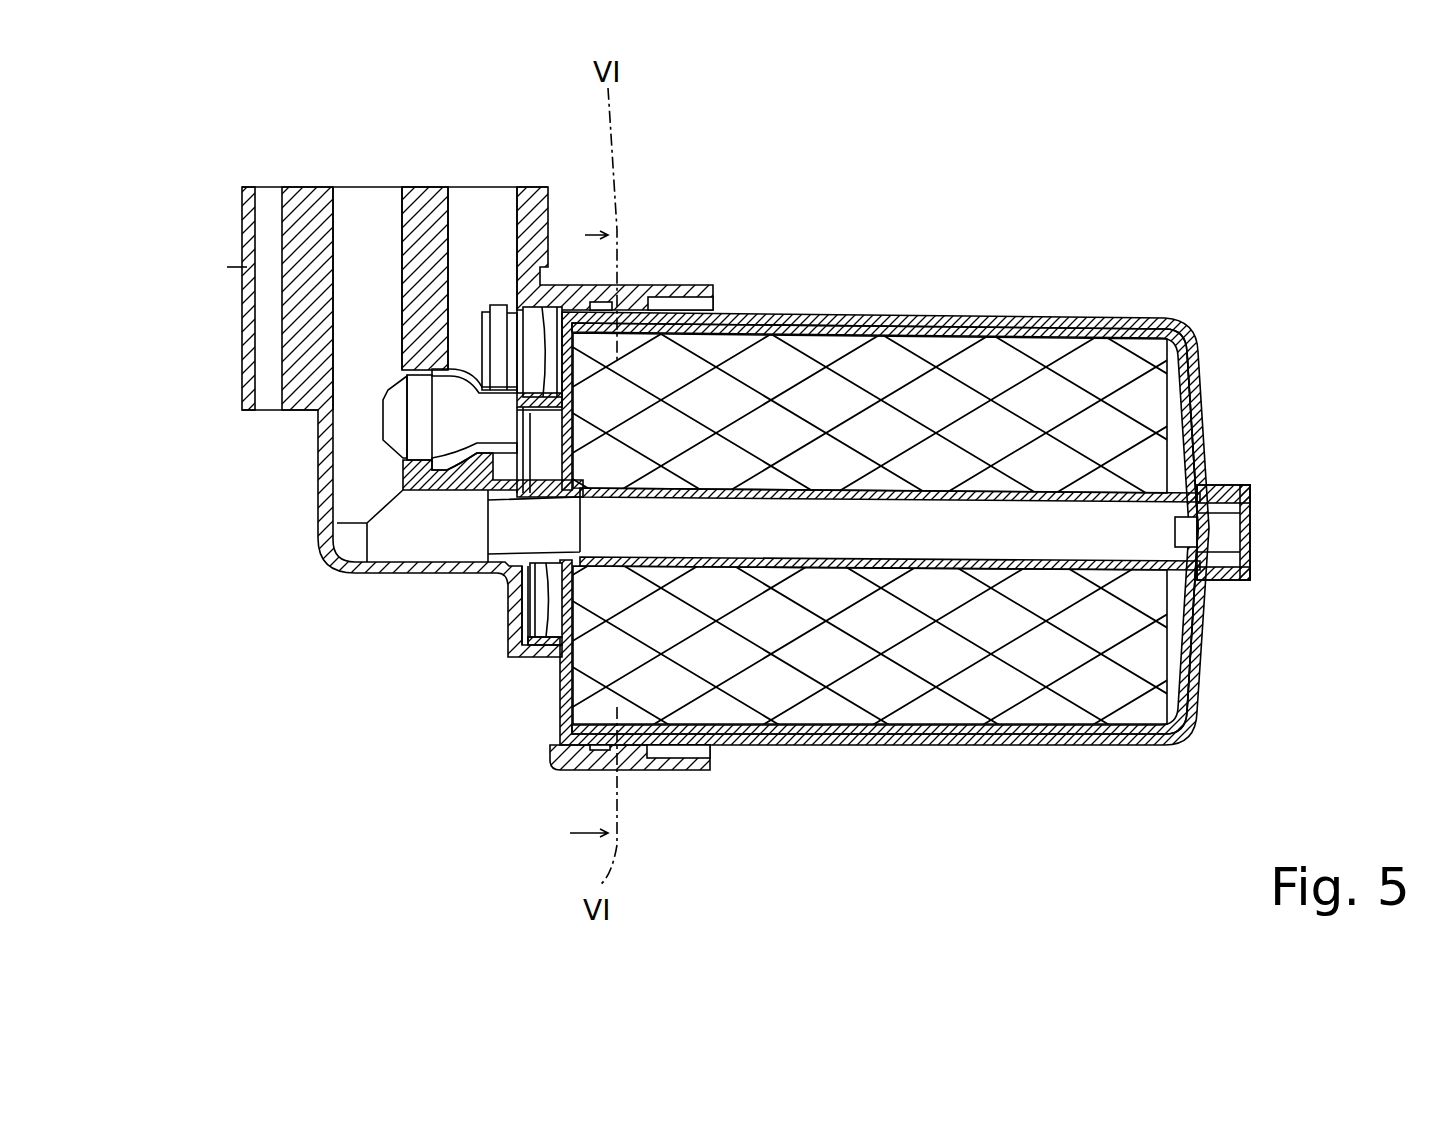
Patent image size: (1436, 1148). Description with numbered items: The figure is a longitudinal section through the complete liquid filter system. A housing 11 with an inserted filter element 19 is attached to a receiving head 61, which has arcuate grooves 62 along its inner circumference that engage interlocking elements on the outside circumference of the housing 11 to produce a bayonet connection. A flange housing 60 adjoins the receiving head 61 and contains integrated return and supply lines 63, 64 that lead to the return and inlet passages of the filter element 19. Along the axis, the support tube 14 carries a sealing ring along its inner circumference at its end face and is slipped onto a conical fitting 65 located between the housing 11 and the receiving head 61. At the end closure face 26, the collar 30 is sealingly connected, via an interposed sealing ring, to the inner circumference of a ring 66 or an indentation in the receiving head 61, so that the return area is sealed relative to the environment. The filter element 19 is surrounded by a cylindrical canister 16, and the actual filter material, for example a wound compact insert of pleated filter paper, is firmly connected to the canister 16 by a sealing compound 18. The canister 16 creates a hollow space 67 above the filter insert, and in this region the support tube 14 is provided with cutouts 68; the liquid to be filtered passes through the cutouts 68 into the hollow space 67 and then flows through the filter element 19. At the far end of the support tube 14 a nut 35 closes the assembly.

The flange housing 60 is at (300, 372).
The supply line 64 is at (364, 212).
The return line 63 is at (482, 212).
The ring 66 is at (568, 283).
The receiving head 61 is at (628, 283).
The arcuate grooves 62 is at (688, 283).
The housing 11 is at (750, 742).
The cylindrical canister 16 is at (777, 732).
The sealing compound 18 is at (820, 738).
The support tube 14 is at (790, 567).
The filter element 19 is at (1017, 658).
The hollow space 67 is at (1188, 458).
The cutouts 68 is at (1197, 478).
The nut 35 is at (1250, 520).
The collar 30 is at (510, 645).
The conical fitting 65 is at (560, 530).
The end closure face 26 is at (615, 765).